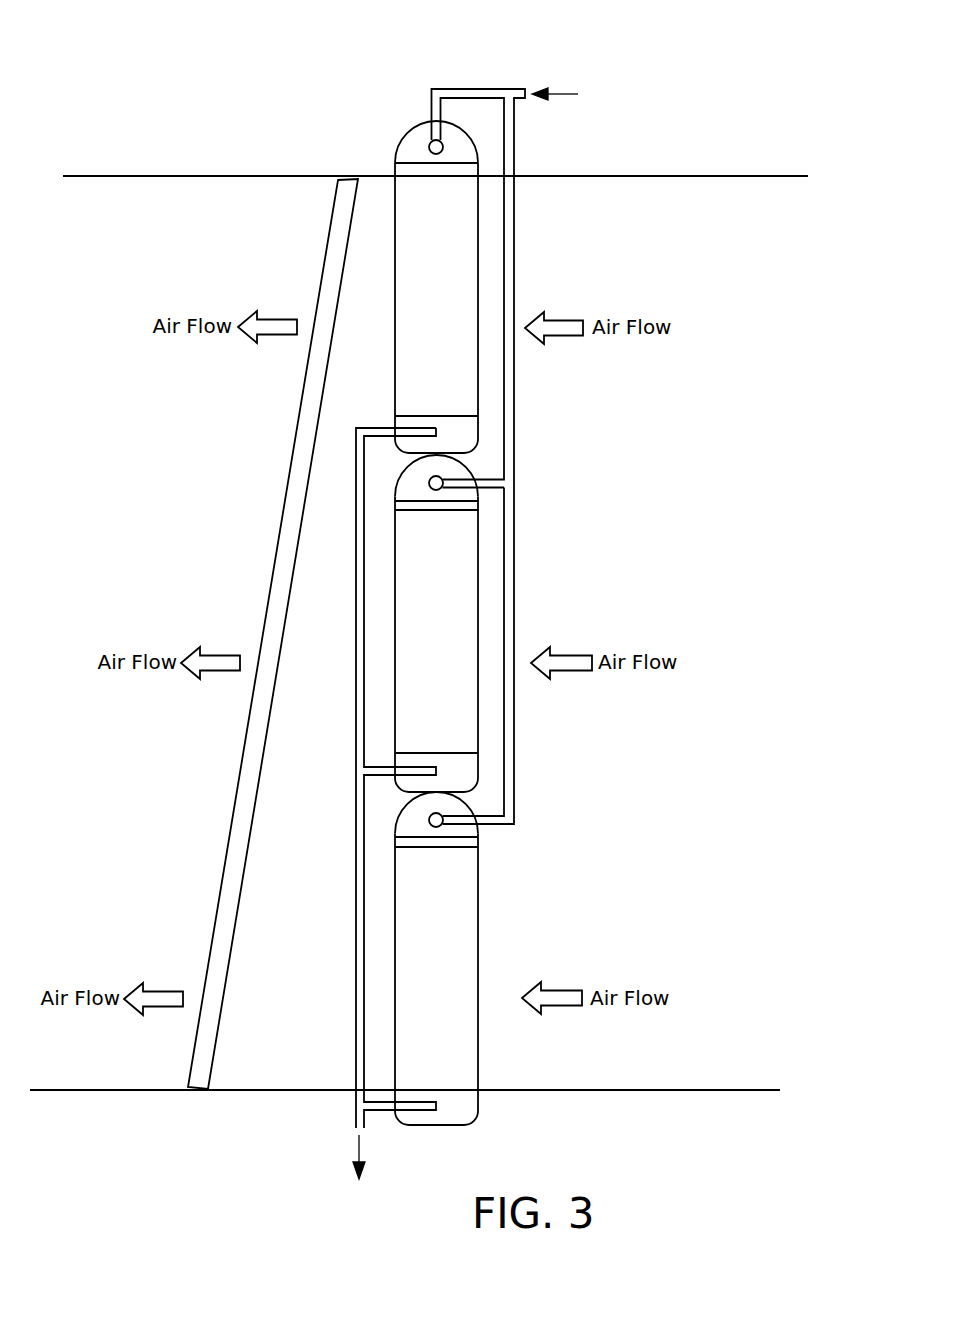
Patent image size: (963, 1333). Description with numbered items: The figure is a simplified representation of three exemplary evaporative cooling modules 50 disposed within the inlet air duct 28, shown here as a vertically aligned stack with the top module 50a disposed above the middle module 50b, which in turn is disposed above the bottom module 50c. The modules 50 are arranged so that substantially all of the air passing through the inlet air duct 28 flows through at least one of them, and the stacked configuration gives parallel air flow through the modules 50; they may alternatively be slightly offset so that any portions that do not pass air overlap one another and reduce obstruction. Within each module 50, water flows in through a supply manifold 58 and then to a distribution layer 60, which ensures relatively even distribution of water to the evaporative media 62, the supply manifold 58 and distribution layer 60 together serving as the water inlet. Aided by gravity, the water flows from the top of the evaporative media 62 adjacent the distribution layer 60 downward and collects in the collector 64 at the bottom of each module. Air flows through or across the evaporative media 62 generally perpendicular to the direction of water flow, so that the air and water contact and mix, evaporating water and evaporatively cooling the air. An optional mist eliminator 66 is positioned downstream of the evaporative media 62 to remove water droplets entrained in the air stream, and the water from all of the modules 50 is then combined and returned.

The inlet air duct 28 is at (667, 178).
The evaporative cooling module 50 is at (673, 95).
The top module 50a is at (537, 265).
The middle module 50b is at (535, 590).
The bottom module 50c is at (503, 930).
The supply manifold 58 is at (411, 142).
The distribution layer 60 is at (410, 171).
The evaporative media 62 is at (423, 302).
The collector 64 is at (467, 438).
The mist eliminator 66 is at (327, 270).